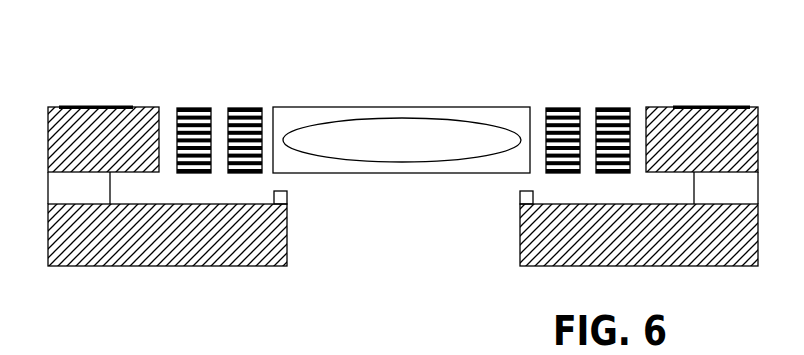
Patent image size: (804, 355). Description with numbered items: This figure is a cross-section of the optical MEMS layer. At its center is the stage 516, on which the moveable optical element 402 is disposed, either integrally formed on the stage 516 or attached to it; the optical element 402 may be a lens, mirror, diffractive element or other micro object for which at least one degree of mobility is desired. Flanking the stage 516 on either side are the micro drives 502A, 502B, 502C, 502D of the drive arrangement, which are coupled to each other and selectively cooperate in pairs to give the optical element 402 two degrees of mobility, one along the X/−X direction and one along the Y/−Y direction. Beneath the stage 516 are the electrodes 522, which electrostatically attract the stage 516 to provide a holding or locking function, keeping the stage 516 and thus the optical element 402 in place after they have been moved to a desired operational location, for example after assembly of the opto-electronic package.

The moveable optical element 402 is at (389, 149).
The micro drive 502A is at (558, 107).
The micro drive 502B is at (615, 107).
The micro drive 502C is at (247, 107).
The micro drive 502D is at (190, 107).
The stage 516 is at (470, 174).
The electrodes 522 is at (288, 197).